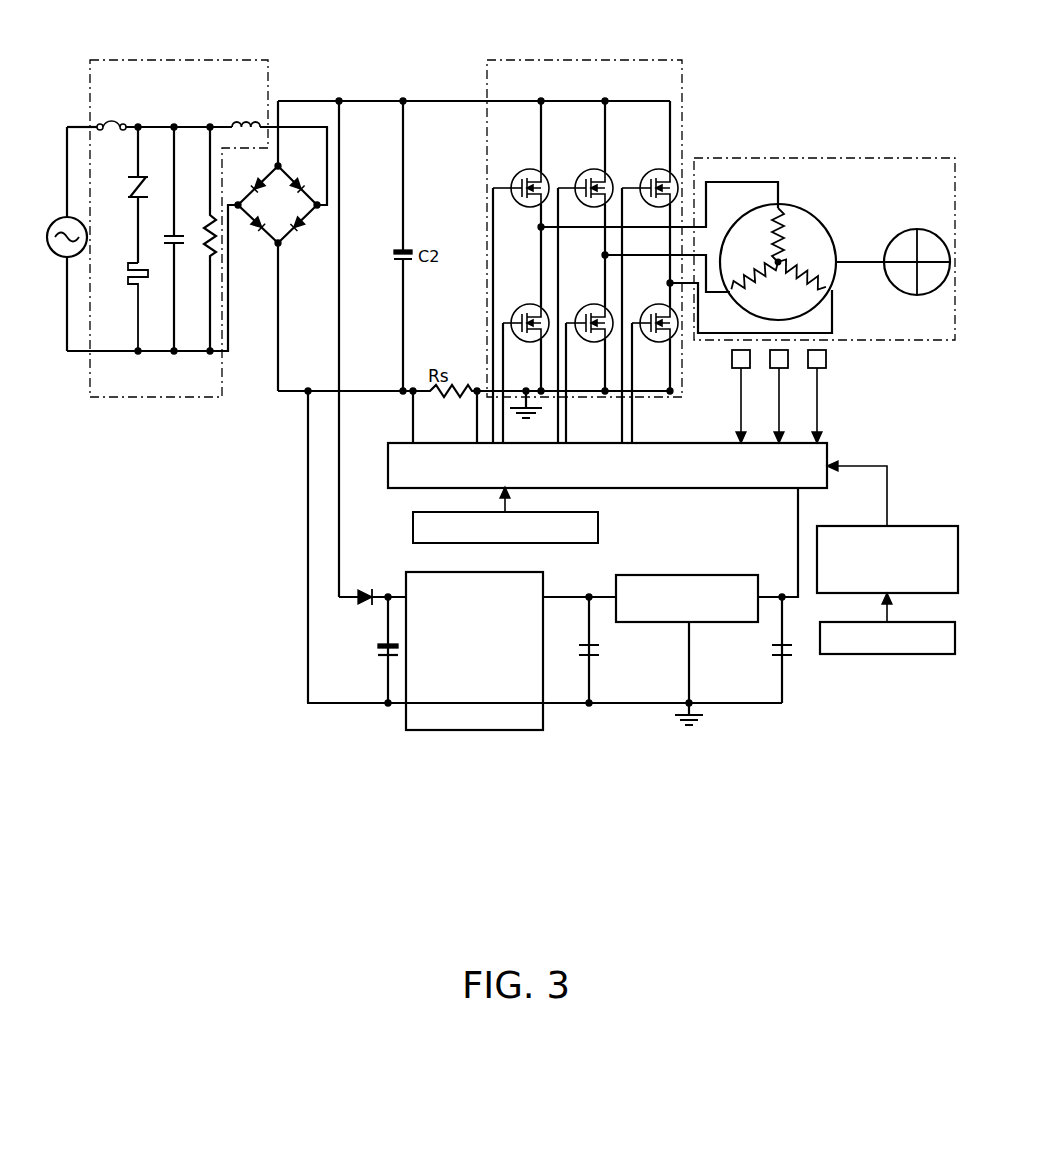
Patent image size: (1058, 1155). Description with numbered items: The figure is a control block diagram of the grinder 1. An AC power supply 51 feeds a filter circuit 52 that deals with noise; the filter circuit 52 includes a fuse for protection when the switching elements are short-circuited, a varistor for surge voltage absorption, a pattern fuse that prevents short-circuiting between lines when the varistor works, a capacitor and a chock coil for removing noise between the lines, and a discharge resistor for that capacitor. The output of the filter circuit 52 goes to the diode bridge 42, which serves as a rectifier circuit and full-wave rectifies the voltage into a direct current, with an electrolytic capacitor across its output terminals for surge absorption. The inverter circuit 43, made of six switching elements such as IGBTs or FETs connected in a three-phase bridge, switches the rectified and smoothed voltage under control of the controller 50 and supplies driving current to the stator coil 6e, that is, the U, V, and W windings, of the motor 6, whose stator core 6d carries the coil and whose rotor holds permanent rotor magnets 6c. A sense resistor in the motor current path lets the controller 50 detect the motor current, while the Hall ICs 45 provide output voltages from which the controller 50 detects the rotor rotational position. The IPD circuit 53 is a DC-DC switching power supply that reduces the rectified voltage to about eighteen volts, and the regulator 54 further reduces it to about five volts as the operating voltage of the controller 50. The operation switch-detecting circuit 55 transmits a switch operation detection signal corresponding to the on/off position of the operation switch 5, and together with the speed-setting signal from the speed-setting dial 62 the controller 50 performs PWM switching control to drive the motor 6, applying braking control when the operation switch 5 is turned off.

The grinder 1 is at (537, 828).
The operation switch 5 is at (905, 655).
The motor 6 is at (824, 213).
The rotor magnets 6c is at (922, 230).
The stator core 6d is at (798, 216).
The stator coil 6e is at (792, 232).
The diode bridge 42 is at (262, 248).
The inverter circuit 43 is at (487, 80).
The Hall ICs 45 is at (824, 362).
The controller 50 is at (634, 490).
The AC power supply 51 is at (53, 213).
The filter circuit 52 is at (128, 60).
The IPD circuit 53 is at (497, 572).
The regulator 54 is at (708, 575).
The operation switch-detecting circuit 55 is at (920, 526).
The speed-setting dial 62 is at (413, 523).